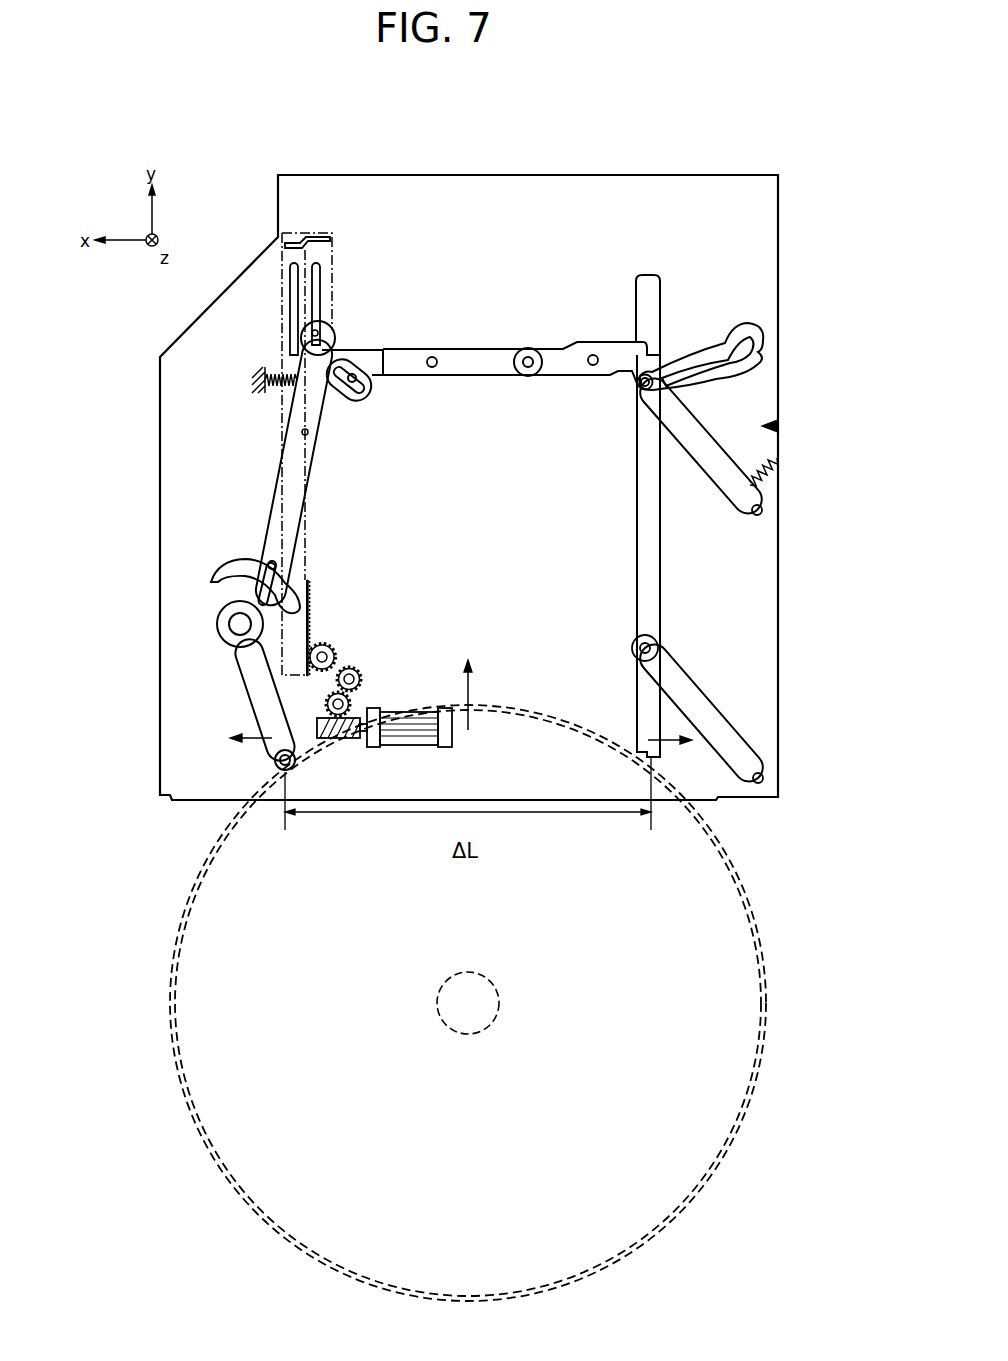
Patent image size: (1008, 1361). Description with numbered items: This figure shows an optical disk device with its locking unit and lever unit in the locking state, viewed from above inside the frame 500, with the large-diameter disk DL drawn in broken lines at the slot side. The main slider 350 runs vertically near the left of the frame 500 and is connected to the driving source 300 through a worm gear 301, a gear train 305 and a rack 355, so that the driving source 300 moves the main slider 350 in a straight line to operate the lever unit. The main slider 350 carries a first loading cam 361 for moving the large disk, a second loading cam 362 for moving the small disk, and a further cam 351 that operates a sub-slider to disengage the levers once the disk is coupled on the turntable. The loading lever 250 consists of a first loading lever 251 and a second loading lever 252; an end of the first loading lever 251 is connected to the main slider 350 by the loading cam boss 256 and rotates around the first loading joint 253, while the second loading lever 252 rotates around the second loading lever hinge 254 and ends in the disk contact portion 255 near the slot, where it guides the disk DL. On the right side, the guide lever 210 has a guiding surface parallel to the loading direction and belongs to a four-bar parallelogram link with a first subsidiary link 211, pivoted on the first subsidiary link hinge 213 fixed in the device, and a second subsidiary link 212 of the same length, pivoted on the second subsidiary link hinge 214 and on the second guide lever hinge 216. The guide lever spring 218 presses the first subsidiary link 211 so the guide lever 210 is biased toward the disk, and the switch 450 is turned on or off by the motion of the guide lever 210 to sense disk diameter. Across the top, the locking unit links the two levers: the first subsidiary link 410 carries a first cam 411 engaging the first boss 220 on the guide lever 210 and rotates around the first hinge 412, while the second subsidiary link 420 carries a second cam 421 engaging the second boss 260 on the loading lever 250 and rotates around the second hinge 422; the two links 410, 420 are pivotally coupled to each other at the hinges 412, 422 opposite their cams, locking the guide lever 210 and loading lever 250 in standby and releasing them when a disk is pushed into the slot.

The frame 500 is at (778, 230).
The large-diameter disk DL is at (640, 1222).
The main slider 350 is at (307, 553).
The cam 351 is at (330, 240).
The first loading cam 361 is at (297, 287).
The second loading cam 362 is at (317, 275).
The rack 355 is at (308, 610).
The gear train 305 is at (383, 690).
The worm gear 301 is at (356, 740).
The driving source 300 is at (430, 750).
The loading lever 250 is at (150, 497).
The first loading lever 251 is at (275, 518).
The loading cam boss 256 is at (318, 333).
The first loading joint 253 is at (309, 432).
The second loading lever 252 is at (222, 612).
The second loading lever hinge 254 is at (252, 632).
The disk contact portion 255 is at (275, 762).
The second boss 260 is at (360, 370).
The second cam 421 is at (378, 400).
The second subsidiary link 420 is at (476, 376).
The second hinge 422 is at (434, 360).
The first subsidiary link 410 is at (556, 376).
The first hinge 412 is at (593, 355).
The guide lever 210 is at (649, 277).
The first boss 220 is at (640, 390).
The first cam 411 is at (717, 365).
The first subsidiary link 211 is at (720, 442).
The first subsidiary link hinge 213 is at (763, 510).
The guide lever spring 218 is at (777, 462).
The switch 450 is at (778, 426).
The second subsidiary link 212 is at (700, 690).
The second guide lever hinge 216 is at (656, 645).
The second subsidiary link hinge 214 is at (773, 778).